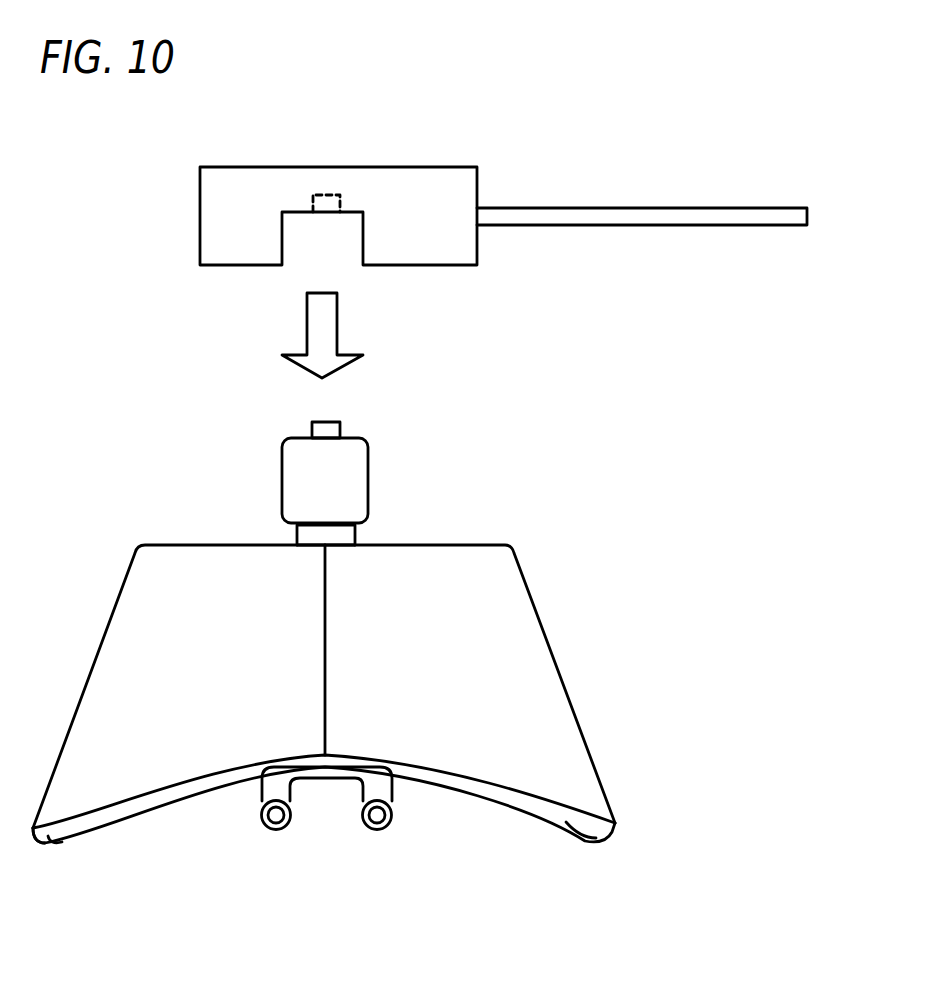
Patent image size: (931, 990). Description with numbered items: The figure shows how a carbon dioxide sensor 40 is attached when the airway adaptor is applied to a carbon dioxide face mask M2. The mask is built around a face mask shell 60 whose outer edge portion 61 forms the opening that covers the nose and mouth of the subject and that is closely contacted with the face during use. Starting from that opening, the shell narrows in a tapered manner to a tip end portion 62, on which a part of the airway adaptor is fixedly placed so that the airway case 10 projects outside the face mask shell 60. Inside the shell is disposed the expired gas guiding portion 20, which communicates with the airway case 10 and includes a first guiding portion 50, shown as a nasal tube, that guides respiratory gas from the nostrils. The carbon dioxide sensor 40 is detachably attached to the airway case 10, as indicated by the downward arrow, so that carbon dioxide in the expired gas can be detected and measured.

The airway case 10 is at (358, 482).
The expired gas guiding portion 20 is at (321, 794).
The carbon dioxide sensor 40 is at (203, 223).
The first guiding portion 50 is at (268, 793).
The face mask shell 60 is at (543, 712).
The outer edge portion 61 is at (40, 848).
The tip end portion 62 is at (360, 543).
The carbon dioxide face mask M2 is at (556, 592).